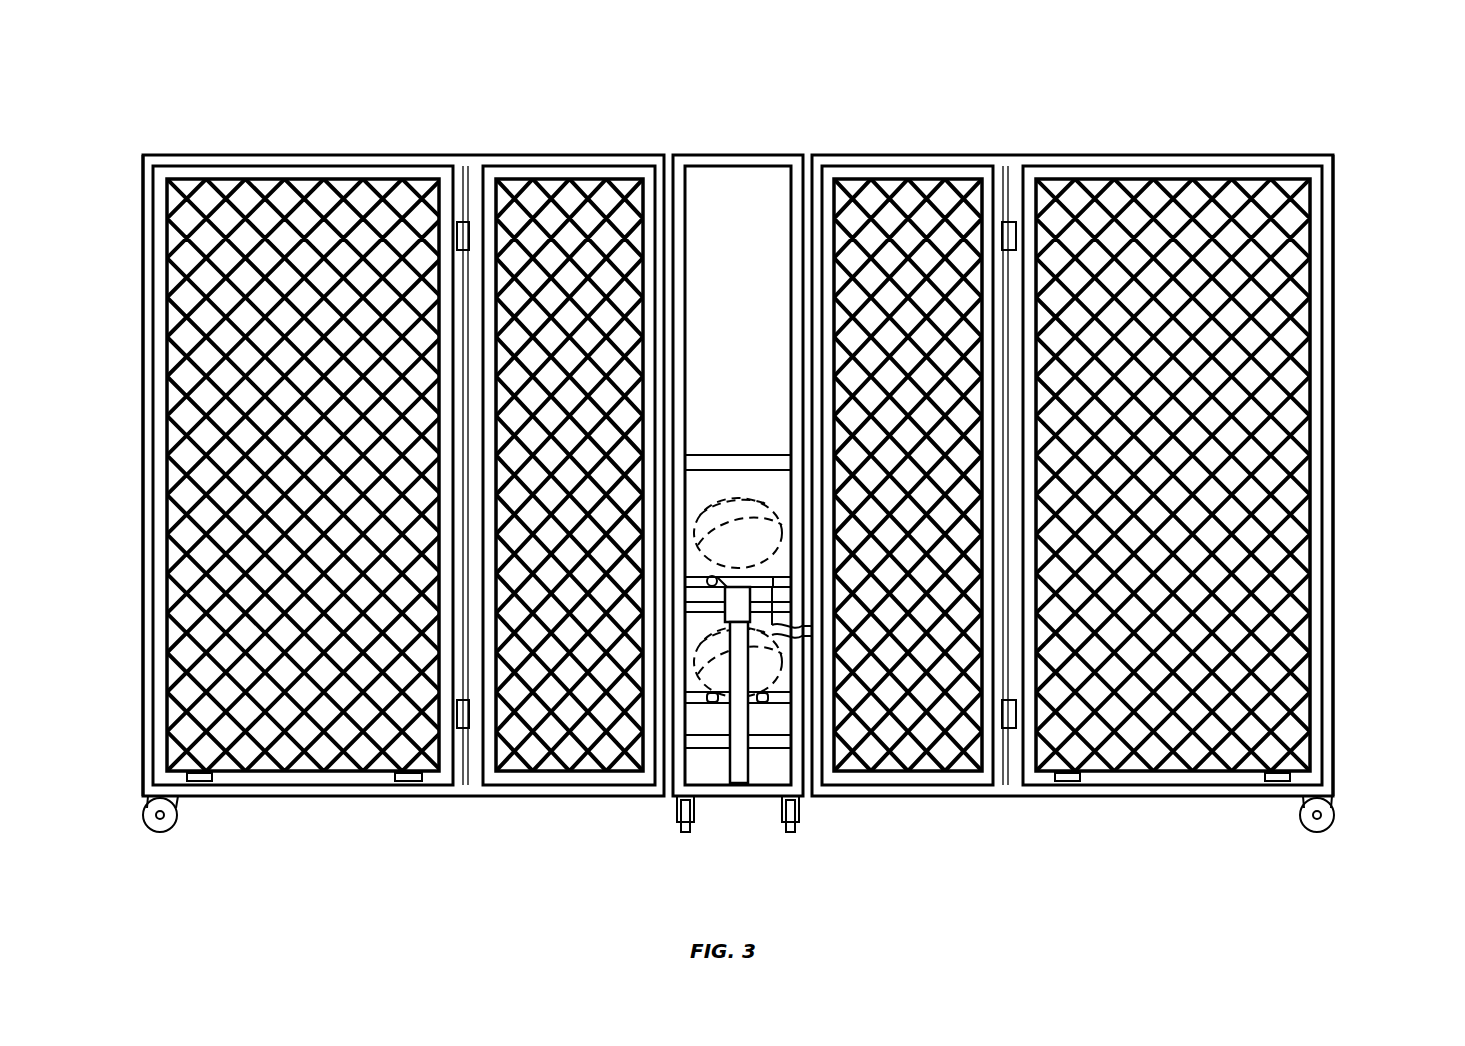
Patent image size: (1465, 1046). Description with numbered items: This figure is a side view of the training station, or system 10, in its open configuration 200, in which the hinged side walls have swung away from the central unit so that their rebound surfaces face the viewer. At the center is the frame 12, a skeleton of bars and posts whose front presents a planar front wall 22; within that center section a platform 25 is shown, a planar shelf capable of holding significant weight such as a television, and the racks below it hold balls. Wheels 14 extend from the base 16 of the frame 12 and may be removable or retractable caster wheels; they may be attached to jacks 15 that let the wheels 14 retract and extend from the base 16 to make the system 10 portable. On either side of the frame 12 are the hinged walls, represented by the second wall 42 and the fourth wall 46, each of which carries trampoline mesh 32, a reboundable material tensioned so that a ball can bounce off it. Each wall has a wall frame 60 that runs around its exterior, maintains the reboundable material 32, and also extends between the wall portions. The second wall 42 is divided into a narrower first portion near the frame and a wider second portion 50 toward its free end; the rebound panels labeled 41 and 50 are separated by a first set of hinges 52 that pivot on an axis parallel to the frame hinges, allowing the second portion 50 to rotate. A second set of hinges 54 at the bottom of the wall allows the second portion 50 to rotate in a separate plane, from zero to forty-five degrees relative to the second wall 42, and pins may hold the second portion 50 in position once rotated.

The open configuration 200 is at (280, 104).
The system 10 is at (1345, 112).
The frame 12 is at (780, 160).
The wheels 14 is at (1315, 832).
The jacks 15 is at (737, 725).
The base 16 is at (730, 790).
The front wall 22 is at (800, 745).
The platform 25 is at (697, 455).
The trampoline mesh 32 is at (345, 720).
The first door 41 is at (995, 147).
The second wall 42 is at (1017, 788).
The fourth wall 46 is at (462, 786).
The second portion 50 is at (1330, 147).
The first set of hinges 52 is at (463, 236).
The second set of hinges 54 is at (200, 781).
The wall frame 60 is at (148, 410).